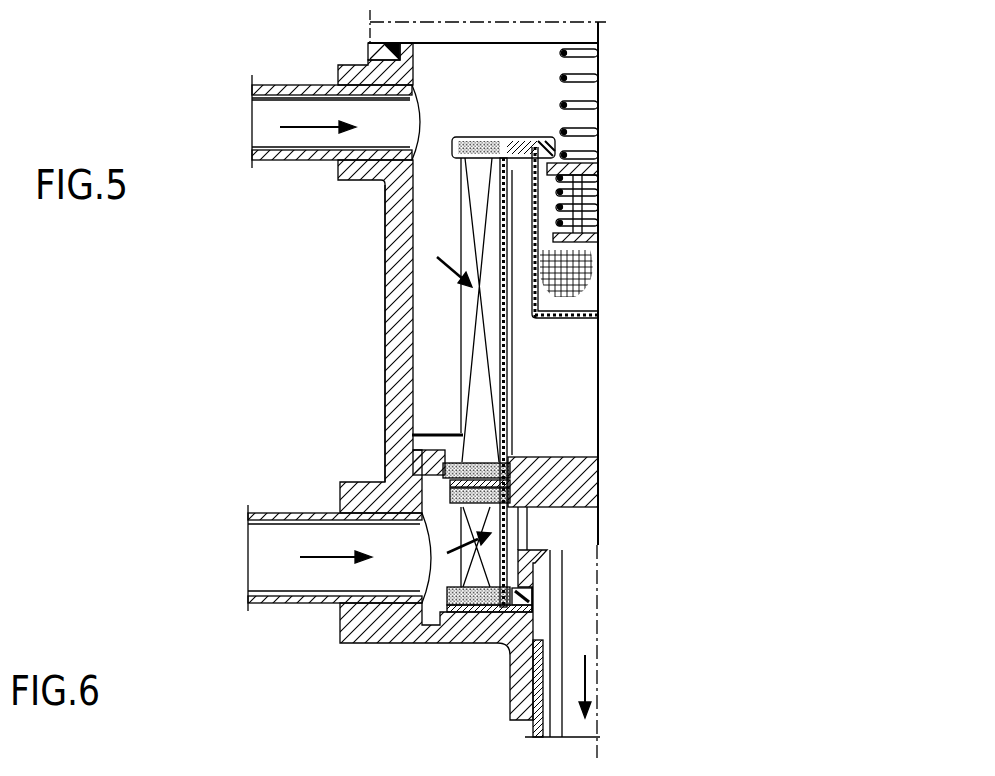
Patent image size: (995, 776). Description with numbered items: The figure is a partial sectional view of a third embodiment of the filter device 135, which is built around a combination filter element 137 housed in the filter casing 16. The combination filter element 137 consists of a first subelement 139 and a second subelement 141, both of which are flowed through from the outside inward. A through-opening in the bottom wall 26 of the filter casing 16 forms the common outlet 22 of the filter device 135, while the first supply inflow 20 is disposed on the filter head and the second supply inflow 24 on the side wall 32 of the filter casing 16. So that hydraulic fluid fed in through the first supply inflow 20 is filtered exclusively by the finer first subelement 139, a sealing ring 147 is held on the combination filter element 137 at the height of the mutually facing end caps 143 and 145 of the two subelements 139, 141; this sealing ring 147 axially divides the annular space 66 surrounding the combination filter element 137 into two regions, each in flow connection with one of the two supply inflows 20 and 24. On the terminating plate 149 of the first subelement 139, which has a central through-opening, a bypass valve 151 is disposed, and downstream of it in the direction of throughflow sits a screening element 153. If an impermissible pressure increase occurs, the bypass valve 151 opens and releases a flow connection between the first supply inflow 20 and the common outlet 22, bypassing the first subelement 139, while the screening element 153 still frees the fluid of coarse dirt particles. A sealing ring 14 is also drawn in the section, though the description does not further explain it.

The sealing ring 14 is at (352, 47).
The filter casing 16 is at (372, 438).
The first supply inflow 20 is at (333, 182).
The common outlet 22 is at (514, 688).
The second supply inflow 24 is at (340, 618).
The bottom wall 26 is at (462, 630).
The side wall 32 is at (392, 229).
The annular space 66 is at (430, 414).
The filter device 135 is at (668, 181).
The combination filter element 137 is at (455, 317).
The first subelement 139 is at (476, 373).
The second subelement 141 is at (465, 571).
The end cap 143 is at (513, 463).
The end cap 145 is at (513, 484).
The sealing ring 147 is at (424, 457).
The terminating plate 149 is at (556, 149).
The bypass valve 151 is at (611, 184).
The screening element 153 is at (560, 300).